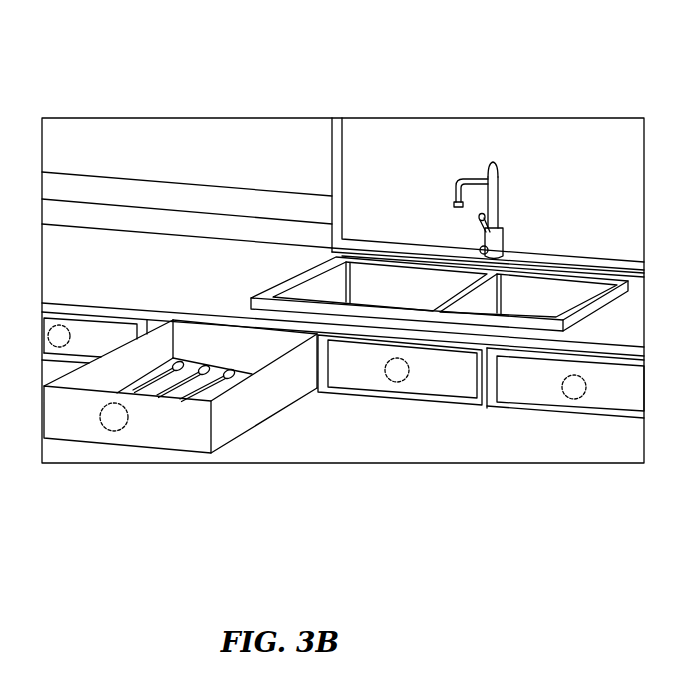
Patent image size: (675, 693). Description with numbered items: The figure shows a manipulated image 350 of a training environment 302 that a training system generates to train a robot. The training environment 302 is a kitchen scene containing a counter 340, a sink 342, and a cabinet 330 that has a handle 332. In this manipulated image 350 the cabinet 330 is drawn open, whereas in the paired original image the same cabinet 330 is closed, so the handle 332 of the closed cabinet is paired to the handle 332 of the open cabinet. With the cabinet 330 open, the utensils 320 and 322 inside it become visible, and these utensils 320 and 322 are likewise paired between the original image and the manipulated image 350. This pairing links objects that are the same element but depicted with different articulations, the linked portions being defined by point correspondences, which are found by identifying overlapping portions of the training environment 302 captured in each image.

The manipulated image 350 is at (92, 84).
The training environment 302 is at (467, 118).
The counter 340 is at (107, 247).
The sink 342 is at (547, 273).
The cabinet 330 is at (163, 436).
The utensil 320 is at (177, 362).
The utensil 322 is at (203, 365).
The handle 332 is at (114, 431).